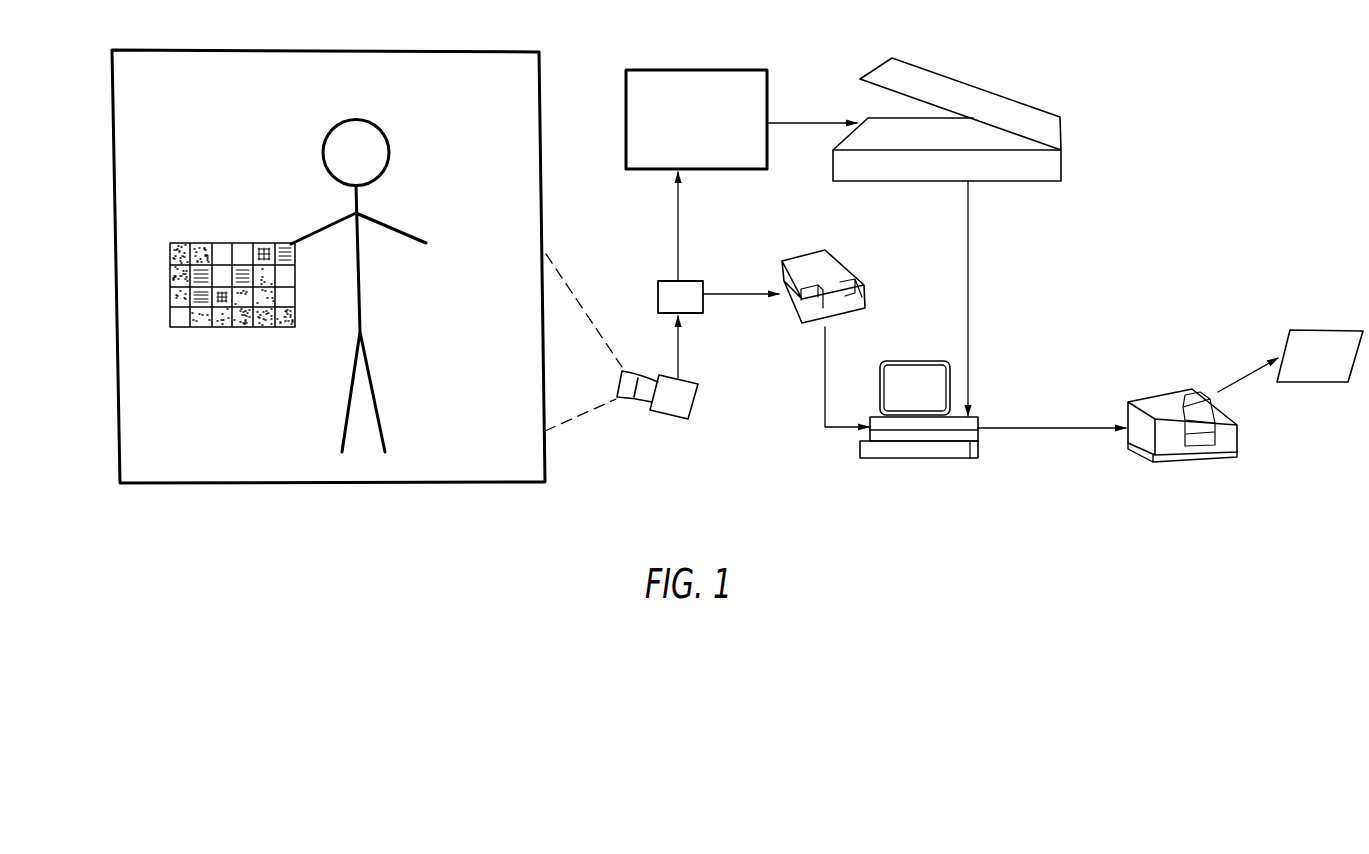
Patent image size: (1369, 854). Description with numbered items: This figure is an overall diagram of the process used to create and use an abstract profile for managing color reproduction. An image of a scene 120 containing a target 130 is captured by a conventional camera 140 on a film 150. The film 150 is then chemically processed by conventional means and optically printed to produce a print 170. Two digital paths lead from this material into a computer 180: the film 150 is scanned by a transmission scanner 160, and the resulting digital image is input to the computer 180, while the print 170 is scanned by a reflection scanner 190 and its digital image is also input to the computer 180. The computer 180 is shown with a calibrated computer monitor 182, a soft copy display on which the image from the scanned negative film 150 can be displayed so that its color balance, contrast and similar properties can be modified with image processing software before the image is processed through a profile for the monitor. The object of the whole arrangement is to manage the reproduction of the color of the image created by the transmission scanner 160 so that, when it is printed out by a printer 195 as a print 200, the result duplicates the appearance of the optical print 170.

The scene 120 is at (545, 462).
The target 130 is at (297, 297).
The camera 140 is at (693, 402).
The film 150 is at (703, 282).
The transmission scanner 160 is at (855, 283).
The print 170 is at (768, 78).
The computer 180 is at (980, 417).
The calibrated computer monitor 182 is at (905, 361).
The reflection scanner 190 is at (1062, 162).
The printer 195 is at (1237, 443).
The print 200 is at (1327, 330).